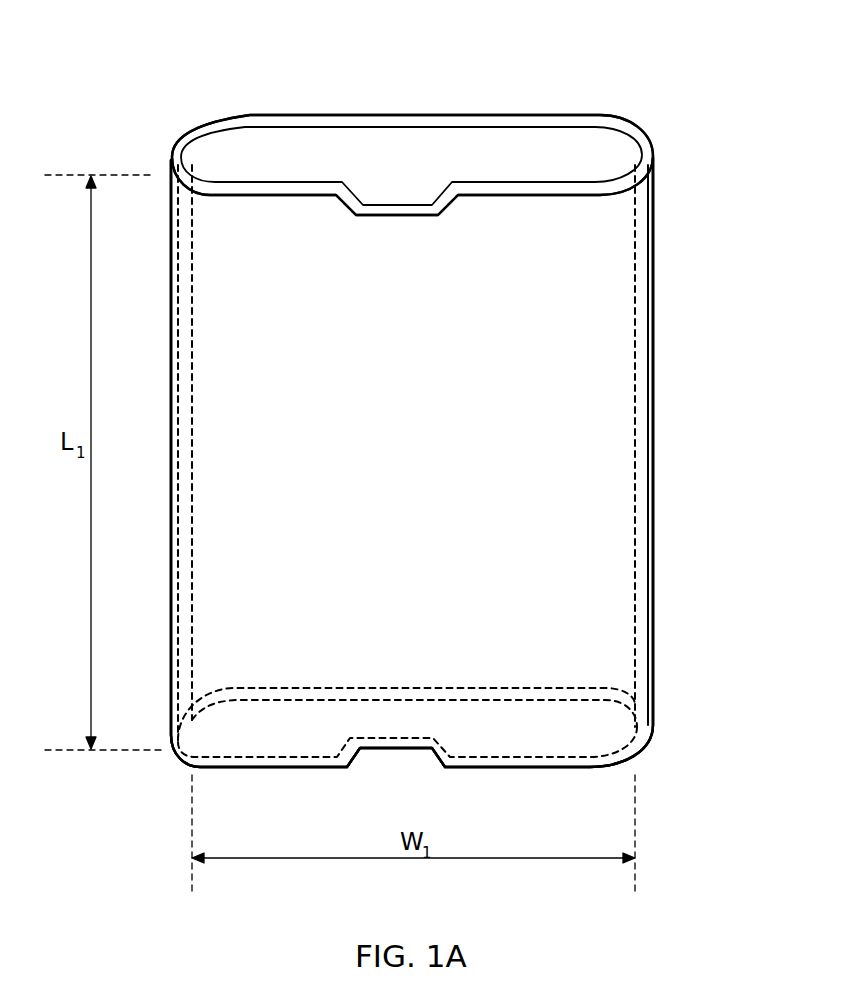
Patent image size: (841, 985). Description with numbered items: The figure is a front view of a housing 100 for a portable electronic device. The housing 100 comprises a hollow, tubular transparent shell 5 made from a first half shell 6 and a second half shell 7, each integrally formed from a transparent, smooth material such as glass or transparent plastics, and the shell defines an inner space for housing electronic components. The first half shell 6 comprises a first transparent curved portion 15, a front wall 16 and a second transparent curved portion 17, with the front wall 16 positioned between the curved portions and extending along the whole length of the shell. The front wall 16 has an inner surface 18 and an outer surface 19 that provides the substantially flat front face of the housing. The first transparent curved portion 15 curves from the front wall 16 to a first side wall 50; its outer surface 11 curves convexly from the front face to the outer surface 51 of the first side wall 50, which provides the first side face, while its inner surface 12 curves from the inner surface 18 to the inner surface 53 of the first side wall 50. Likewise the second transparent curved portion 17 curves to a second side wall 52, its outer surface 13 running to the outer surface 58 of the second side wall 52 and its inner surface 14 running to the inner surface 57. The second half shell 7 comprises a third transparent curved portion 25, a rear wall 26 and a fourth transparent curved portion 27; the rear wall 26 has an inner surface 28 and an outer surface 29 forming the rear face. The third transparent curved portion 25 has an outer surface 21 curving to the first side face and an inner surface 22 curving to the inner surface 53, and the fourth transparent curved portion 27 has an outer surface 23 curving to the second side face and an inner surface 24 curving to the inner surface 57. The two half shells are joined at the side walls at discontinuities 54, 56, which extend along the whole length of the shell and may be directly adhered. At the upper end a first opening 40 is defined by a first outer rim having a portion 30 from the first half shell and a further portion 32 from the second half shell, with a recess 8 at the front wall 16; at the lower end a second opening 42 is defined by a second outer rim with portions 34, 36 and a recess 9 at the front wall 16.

The housing 100 is at (692, 752).
The transparent shell 5 is at (694, 618).
The first half shell 6 is at (528, 285).
The second half shell 7 is at (545, 115).
The recess 8 is at (425, 249).
The recess 9 is at (398, 736).
The outer surface of first transparent curved portion 11 is at (209, 196).
The inner surface of first transparent curved portion 12 is at (228, 181).
The outer surface of second transparent curved portion 13 is at (600, 195).
The inner surface of second transparent curved portion 14 is at (588, 182).
The first transparent curved portion 15 is at (184, 368).
The front wall 16 is at (408, 390).
The second transparent curved portion 17 is at (643, 348).
The inner surface of front wall 18 is at (402, 205).
The outer surface of front wall 19 is at (372, 216).
The outer surface of third transparent curved portion 21 is at (200, 128).
The inner surface of third transparent curved portion 22 is at (230, 128).
The outer surface of fourth transparent curved portion 23 is at (583, 127).
The inner surface of fourth transparent curved portion 24 is at (638, 128).
The third transparent curved portion 25 is at (200, 88).
The rear wall 26 is at (403, 82).
The fourth transparent curved portion 27 is at (630, 96).
The inner surface of rear wall 28 is at (357, 126).
The outer surface of rear wall 29 is at (367, 116).
The portion of first outer rim 30 is at (487, 196).
The further portion of first outer rim 32 is at (505, 116).
The portion of second outer rim 34 is at (500, 769).
The further portion of second outer rim 36 is at (490, 703).
The first opening 40 is at (418, 142).
The second opening 42 is at (377, 776).
The first side wall 50 is at (140, 310).
The outer surface of first side wall 51 is at (172, 167).
The second side wall 52 is at (684, 263).
The inner surface of first side wall 53 is at (198, 156).
The discontinuity 54 is at (190, 150).
The discontinuity 56 is at (651, 154).
The inner surface of second side wall 57 is at (636, 162).
The outer surface of second side wall 58 is at (652, 182).